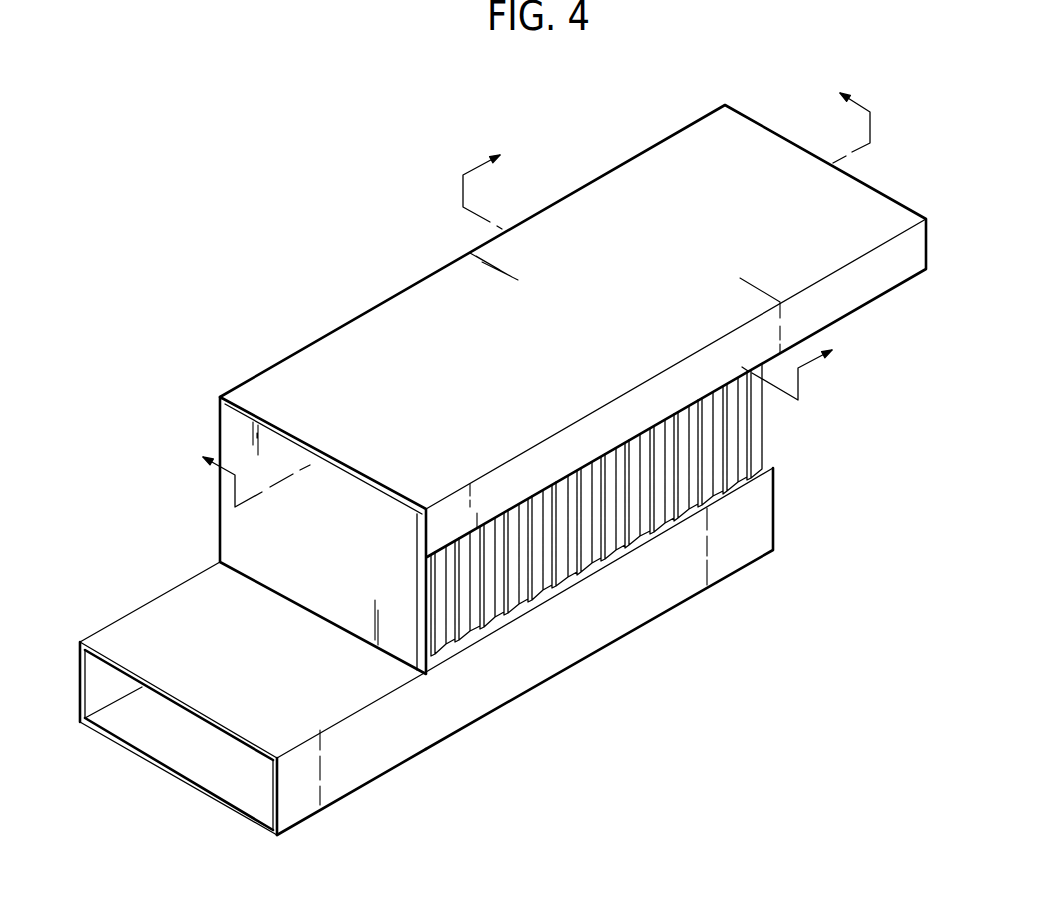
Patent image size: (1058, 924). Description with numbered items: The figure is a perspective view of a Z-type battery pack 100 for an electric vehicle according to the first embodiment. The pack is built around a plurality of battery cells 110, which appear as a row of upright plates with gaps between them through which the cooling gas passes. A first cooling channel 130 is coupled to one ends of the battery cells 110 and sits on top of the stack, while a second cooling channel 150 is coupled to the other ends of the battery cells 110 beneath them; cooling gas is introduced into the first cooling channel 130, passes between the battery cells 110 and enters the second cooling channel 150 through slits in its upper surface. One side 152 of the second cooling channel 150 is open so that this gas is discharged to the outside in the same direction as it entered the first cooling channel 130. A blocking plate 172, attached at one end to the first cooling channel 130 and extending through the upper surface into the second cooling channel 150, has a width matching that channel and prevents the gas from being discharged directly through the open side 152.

The Z-type battery pack 100 is at (290, 235).
The battery cells 110 is at (502, 615).
The first cooling channel 130 is at (653, 160).
The second cooling channel 150 is at (680, 590).
The side of the second cooling channel 152 is at (253, 805).
The blocking plate 172 is at (228, 422).